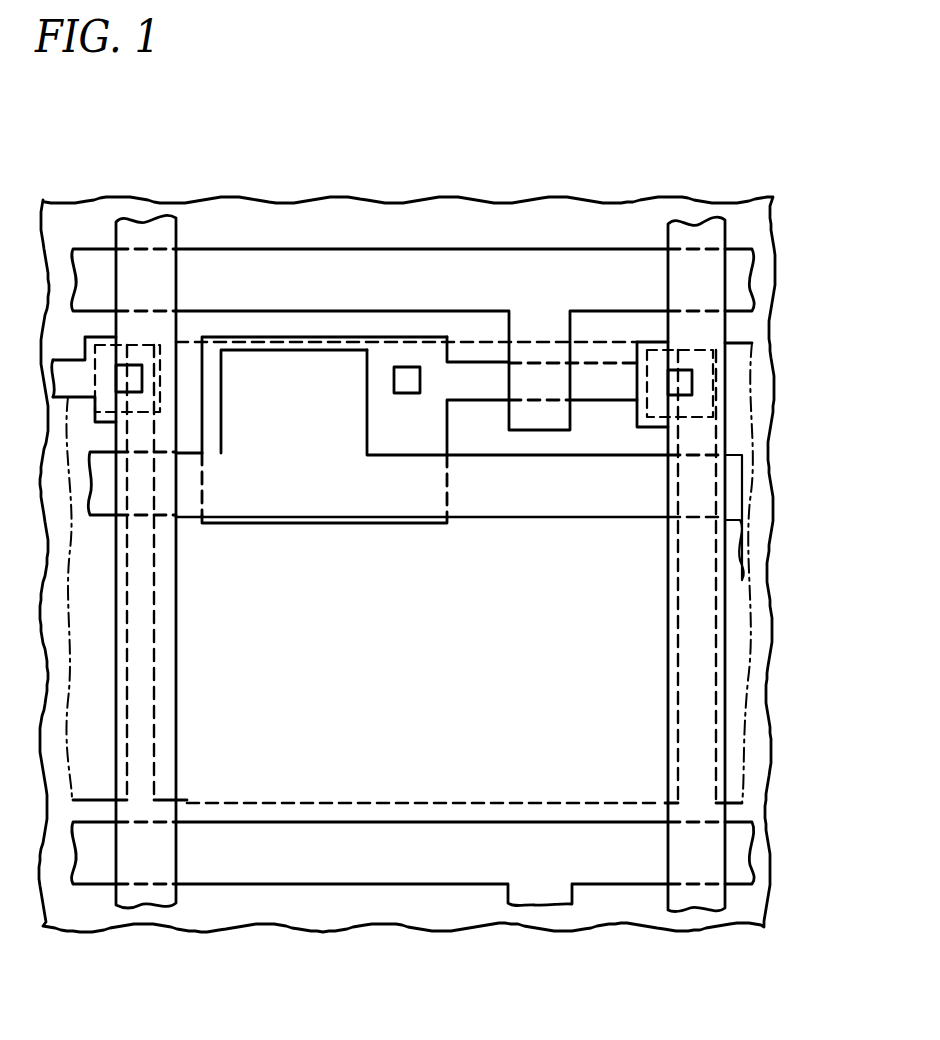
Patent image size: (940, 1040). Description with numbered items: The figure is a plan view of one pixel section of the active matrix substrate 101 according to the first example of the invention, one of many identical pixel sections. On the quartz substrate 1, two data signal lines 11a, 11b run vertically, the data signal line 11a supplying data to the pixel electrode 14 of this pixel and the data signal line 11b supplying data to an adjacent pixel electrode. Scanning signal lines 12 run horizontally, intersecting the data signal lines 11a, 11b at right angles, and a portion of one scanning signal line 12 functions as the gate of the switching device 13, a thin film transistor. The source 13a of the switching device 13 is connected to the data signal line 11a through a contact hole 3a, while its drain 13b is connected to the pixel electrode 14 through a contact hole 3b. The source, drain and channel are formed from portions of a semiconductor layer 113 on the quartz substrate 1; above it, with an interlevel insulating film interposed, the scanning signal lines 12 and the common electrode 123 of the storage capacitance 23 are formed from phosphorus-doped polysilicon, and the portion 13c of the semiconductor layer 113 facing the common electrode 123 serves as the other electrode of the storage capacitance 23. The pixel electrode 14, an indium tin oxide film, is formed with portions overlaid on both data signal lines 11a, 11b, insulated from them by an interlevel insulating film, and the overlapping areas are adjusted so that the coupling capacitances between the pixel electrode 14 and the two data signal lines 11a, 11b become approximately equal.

The quartz substrate 1 is at (766, 652).
The data signal line 11a is at (690, 232).
The data signal line 11b is at (137, 222).
The scanning signal line 12 is at (213, 258).
The switching device 13 is at (528, 380).
The source 13a is at (605, 380).
The drain 13b is at (468, 377).
The portion of the semiconductor layer 13c is at (238, 333).
The pixel electrode 14 is at (265, 803).
The storage capacitance 23 is at (277, 378).
The common electrode 123 is at (312, 360).
The semiconductor layer 113 is at (422, 352).
The contact hole 3a is at (692, 382).
The contact hole 3b is at (400, 367).
The active matrix substrate 101 is at (598, 933).